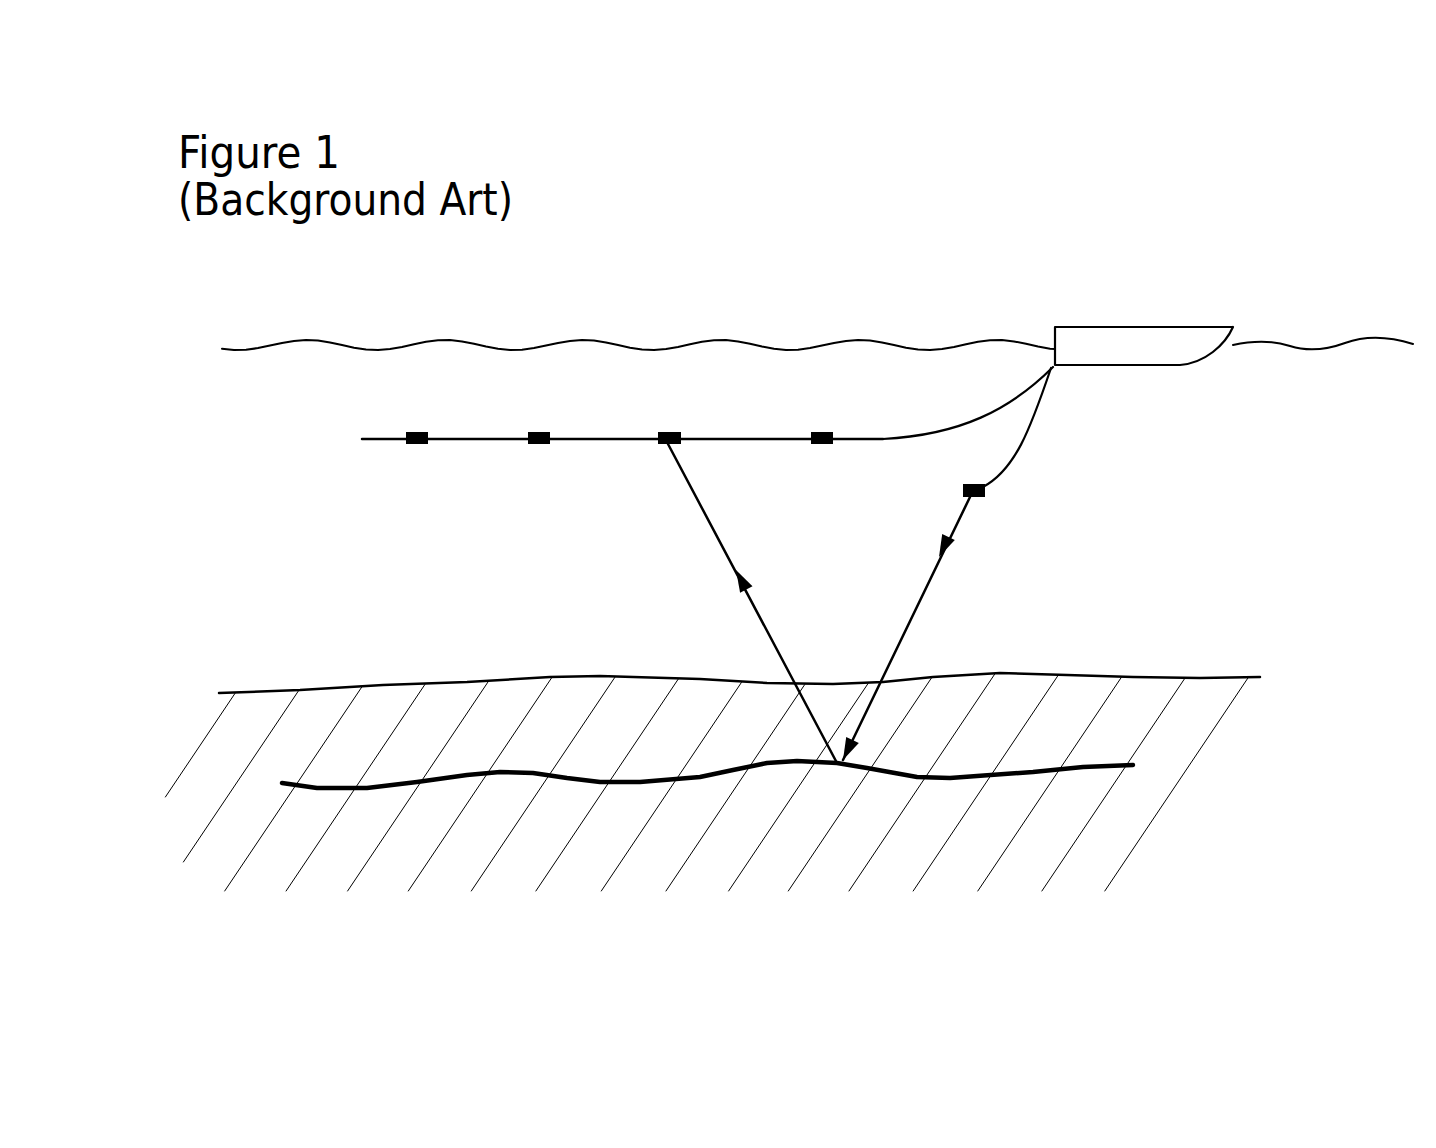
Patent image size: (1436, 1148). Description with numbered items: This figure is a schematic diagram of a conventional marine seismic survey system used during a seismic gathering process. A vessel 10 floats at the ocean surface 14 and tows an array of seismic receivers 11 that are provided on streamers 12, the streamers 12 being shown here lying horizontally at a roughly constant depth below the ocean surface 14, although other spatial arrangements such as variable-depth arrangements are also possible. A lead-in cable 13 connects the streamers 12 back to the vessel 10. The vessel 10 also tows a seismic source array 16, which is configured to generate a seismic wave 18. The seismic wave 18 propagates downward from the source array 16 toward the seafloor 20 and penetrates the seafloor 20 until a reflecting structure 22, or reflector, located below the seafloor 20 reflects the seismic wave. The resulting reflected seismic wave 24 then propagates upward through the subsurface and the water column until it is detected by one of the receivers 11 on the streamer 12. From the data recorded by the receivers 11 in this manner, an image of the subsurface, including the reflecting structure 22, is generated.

The vessel 10 is at (1230, 279).
The seismic receivers 11 is at (418, 445).
The streamers 12 is at (738, 441).
The lead-in cable 13 is at (991, 416).
The ocean surface 14 is at (272, 345).
The seismic source array 16 is at (977, 497).
The seismic wave 18 is at (918, 602).
The seafloor 20 is at (1137, 677).
The reflecting structure 22 is at (978, 775).
The reflected seismic wave 24 is at (707, 522).